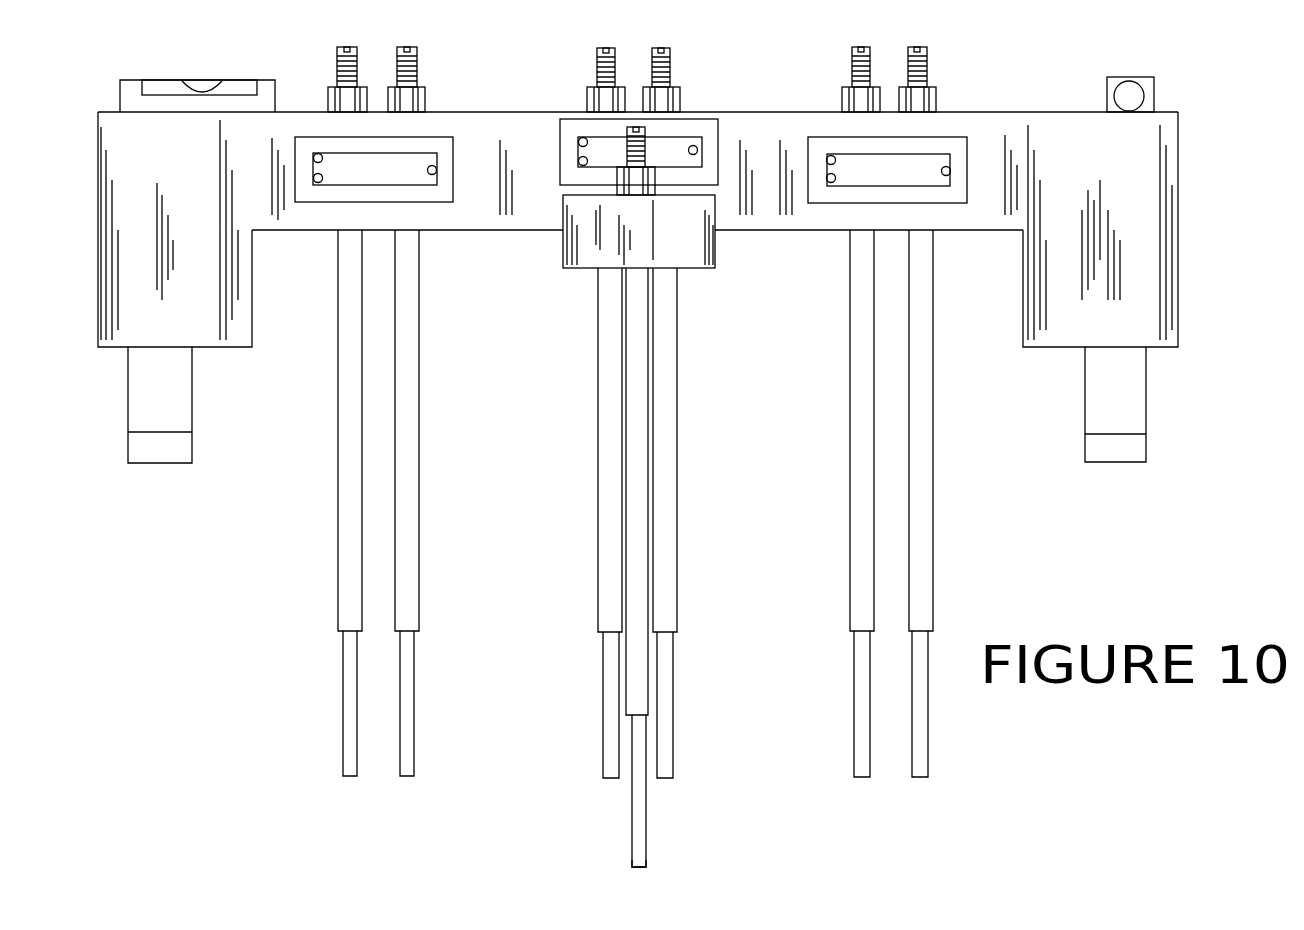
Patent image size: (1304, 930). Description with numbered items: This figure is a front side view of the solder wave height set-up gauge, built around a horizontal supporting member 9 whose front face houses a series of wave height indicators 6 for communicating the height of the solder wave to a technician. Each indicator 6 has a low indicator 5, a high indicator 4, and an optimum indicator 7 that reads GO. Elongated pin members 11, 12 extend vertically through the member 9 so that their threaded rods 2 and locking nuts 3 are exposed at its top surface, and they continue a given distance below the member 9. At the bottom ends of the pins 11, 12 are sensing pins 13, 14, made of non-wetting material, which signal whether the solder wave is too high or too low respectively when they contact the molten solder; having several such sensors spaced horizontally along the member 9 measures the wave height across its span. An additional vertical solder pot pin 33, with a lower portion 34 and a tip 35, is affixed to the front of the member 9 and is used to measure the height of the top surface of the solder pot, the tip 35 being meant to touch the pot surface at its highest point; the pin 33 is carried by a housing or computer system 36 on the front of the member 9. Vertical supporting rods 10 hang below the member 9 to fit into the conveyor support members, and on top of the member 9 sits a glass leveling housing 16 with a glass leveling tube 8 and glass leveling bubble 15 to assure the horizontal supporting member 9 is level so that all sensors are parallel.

The threaded rod 2 is at (413, 72).
The locking nut 3 is at (403, 102).
The high indicator 4 is at (315, 156).
The low indicator 5 is at (317, 183).
The wave height indicator 6 is at (374, 178).
The GO indicator 7 is at (436, 172).
The glass leveling tube 8 is at (243, 87).
The horizontal supporting member 9 is at (163, 232).
The vertical supporting rod 10 is at (175, 415).
The pin member 11 is at (405, 353).
The pin member 12 is at (343, 393).
The sensing pin 13 is at (412, 741).
The sensing pin 14 is at (351, 732).
The glass leveling bubble 15 is at (196, 83).
The glass leveling housing 16 is at (133, 98).
The solder pot pin 33 is at (634, 422).
The lower portion of solder pot pin 34 is at (637, 798).
The tip of solder pot pin 35 is at (641, 870).
The computer system 36 is at (598, 243).